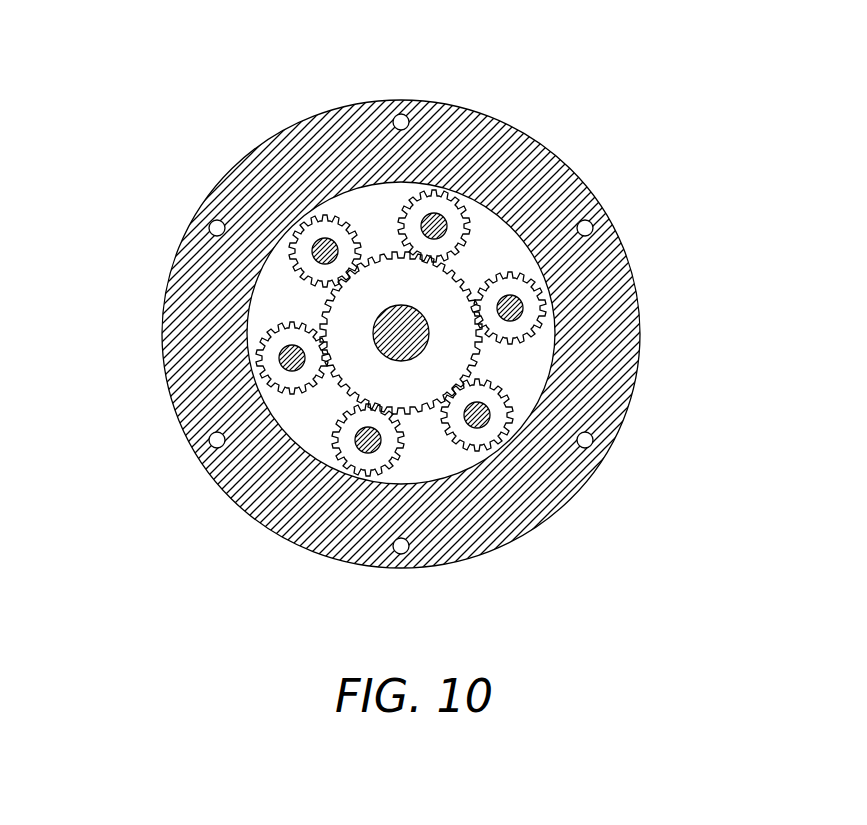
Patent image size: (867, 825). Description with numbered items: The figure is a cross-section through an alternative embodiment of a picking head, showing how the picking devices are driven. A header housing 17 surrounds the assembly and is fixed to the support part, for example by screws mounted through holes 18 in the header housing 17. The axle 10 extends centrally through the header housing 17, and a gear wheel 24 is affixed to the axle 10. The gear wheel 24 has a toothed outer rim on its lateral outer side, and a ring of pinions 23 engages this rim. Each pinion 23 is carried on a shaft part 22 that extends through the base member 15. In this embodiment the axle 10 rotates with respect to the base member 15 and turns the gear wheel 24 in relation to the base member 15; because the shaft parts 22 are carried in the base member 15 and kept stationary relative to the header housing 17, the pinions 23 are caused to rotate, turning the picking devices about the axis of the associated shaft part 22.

The axle 10 is at (421, 289).
The base member 15 is at (528, 353).
The header housing 17 is at (262, 493).
The holes 18 is at (587, 443).
The shaft part 22 is at (442, 223).
The pinion 23 is at (431, 210).
The gear wheel 24 is at (403, 377).